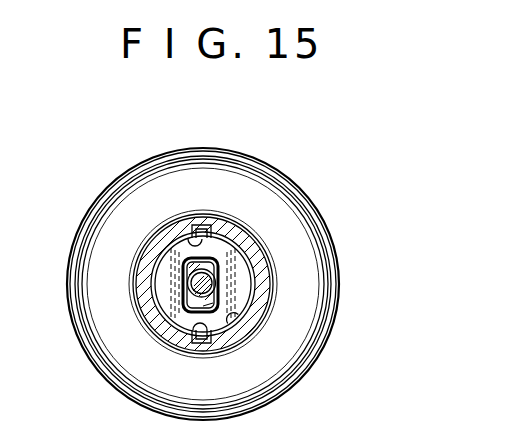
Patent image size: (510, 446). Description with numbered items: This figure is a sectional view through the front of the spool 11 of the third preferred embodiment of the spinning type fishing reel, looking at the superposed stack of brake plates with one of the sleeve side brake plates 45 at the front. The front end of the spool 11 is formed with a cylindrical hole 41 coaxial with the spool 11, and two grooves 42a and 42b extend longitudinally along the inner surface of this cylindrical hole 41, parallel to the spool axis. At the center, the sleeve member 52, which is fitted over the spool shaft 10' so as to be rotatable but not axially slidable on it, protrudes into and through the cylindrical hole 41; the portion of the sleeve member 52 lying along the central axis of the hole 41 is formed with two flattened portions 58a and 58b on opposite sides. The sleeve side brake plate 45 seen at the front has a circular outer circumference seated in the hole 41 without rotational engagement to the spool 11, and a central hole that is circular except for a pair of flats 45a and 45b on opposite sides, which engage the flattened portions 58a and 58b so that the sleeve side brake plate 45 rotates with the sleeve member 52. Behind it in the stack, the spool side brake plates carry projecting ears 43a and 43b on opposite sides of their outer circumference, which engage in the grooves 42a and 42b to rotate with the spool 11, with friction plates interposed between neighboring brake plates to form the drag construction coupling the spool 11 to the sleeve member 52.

The spool shaft 10' is at (203, 284).
The spool 11 is at (262, 252).
The cylindrical hole 41 is at (246, 313).
The groove 42a is at (189, 240).
The groove 42b is at (186, 333).
The projecting ear 43a is at (201, 224).
The projecting ear 43b is at (203, 342).
The sleeve side brake plate 45 is at (180, 240).
The flat 45a is at (177, 266).
The flat 45b is at (221, 296).
The sleeve member 52 is at (226, 232).
The flattened portion 58a is at (183, 286).
The flattened portion 58b is at (250, 258).